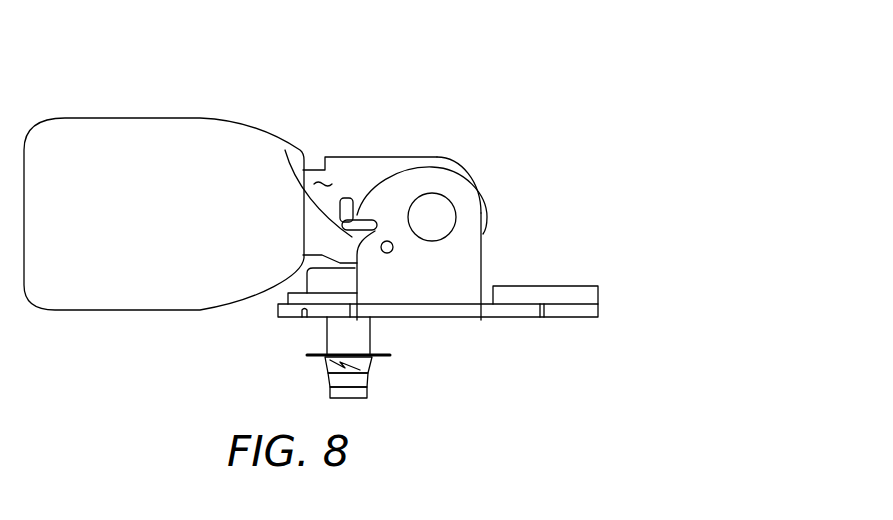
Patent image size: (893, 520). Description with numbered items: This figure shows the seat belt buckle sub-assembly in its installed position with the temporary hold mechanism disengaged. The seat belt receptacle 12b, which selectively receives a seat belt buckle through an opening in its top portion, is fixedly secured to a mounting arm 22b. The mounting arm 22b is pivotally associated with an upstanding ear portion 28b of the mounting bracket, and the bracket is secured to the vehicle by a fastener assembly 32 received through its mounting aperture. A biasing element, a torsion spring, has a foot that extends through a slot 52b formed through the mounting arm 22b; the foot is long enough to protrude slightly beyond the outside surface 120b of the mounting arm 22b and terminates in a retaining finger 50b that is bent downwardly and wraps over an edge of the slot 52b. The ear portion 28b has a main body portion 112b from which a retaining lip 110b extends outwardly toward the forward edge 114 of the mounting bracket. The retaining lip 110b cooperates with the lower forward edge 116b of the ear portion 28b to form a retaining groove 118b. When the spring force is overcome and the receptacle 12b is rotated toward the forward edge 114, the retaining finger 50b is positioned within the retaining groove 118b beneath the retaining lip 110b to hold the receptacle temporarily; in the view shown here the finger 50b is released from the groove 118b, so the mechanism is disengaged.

The seat belt receptacle 12b is at (160, 225).
The mounting arm 22b is at (382, 165).
The ear portion 28b is at (463, 270).
The fastener assembly 32 is at (393, 338).
The retaining finger 50b is at (348, 197).
The slot 52b is at (340, 200).
The retaining lip 110b is at (402, 195).
The main body portion 112b is at (440, 172).
The forward edge 114 is at (278, 310).
The lower forward edge 116b is at (340, 263).
The retaining groove 118b is at (303, 165).
The outside surface 120b is at (312, 183).